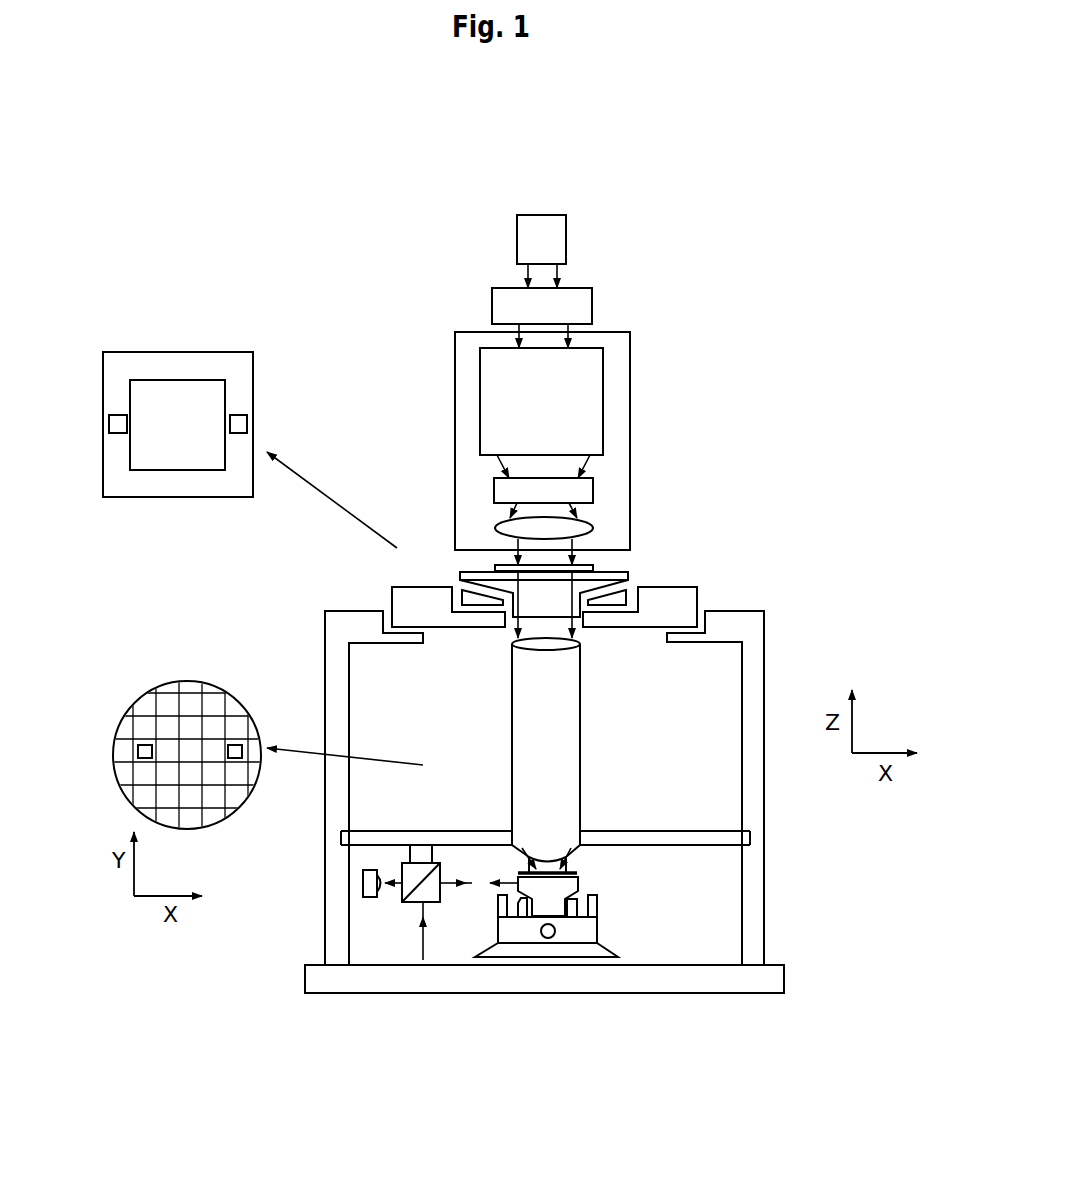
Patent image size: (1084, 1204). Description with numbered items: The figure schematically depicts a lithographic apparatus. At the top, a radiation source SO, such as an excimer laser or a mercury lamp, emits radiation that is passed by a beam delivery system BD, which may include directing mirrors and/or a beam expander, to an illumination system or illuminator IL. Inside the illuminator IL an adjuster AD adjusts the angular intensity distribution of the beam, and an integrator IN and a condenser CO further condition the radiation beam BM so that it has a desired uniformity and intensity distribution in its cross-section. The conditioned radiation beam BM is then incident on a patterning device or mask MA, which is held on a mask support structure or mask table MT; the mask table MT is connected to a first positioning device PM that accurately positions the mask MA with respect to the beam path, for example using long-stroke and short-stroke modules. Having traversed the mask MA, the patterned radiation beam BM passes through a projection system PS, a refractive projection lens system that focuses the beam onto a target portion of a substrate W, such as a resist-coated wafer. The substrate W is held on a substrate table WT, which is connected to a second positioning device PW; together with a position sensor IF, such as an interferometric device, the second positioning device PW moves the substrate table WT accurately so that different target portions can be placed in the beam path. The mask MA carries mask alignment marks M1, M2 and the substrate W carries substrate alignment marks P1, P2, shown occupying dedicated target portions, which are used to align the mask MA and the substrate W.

The radiation source SO is at (566, 243).
The beam delivery system BD is at (592, 310).
The illumination system (illuminator) IL is at (630, 362).
The adjuster AD is at (603, 408).
The integrator IN is at (593, 490).
The condenser CO is at (593, 528).
The radiation beam BM is at (547, 562).
The patterning device (mask) MA is at (495, 568).
The mask support structure (mask table) MT is at (628, 576).
The first positioning device PM is at (392, 587).
The projection system PS is at (580, 730).
The substrate W is at (535, 872).
The substrate table WT is at (578, 882).
The second positioning device PW is at (598, 936).
The position sensor IF is at (395, 906).
The mask alignment mark M1 is at (243, 415).
The mask alignment mark M2 is at (115, 415).
The substrate alignment mark P1 is at (145, 745).
The substrate alignment mark P2 is at (233, 745).